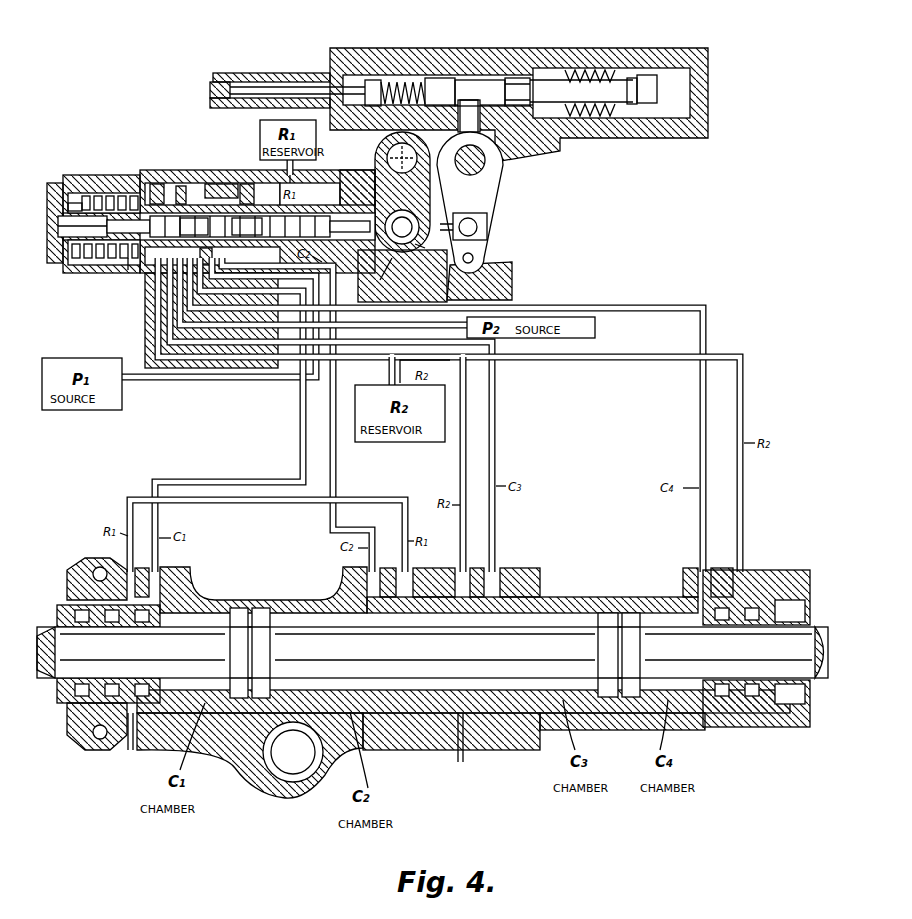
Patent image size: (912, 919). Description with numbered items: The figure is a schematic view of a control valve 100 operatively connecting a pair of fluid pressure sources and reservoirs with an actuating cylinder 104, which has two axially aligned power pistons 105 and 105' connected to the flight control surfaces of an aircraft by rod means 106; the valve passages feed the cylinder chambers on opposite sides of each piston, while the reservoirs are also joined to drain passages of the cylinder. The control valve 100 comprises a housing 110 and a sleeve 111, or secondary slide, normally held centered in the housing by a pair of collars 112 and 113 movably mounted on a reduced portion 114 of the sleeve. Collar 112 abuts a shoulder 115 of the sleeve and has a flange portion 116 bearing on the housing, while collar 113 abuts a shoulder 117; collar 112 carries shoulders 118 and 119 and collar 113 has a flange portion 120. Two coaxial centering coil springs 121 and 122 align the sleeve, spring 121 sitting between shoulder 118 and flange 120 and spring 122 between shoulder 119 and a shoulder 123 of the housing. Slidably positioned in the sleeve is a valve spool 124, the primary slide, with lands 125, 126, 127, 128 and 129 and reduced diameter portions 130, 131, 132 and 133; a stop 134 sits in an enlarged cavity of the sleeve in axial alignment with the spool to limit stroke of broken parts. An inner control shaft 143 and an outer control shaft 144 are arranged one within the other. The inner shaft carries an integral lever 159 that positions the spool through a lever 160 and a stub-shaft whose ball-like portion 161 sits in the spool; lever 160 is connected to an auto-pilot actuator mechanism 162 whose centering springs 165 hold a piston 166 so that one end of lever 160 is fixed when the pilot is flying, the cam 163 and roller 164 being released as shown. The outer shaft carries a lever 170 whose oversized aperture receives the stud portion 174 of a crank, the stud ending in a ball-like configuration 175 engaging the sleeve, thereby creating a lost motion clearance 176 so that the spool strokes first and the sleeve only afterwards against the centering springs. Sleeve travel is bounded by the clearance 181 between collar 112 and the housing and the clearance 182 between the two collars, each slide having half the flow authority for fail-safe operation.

The control valve 100 is at (112, 150).
The actuating cylinder 104 is at (308, 596).
The power piston 105 is at (251, 634).
The power piston 105' is at (619, 633).
The rod means 106 is at (170, 643).
The housing 110 is at (178, 190).
The sleeve 111 is at (340, 183).
The collar 112 is at (124, 270).
The collar 113 is at (74, 270).
The reduced portion 114 is at (54, 264).
The shoulder 115 is at (128, 278).
The flange portion 116 is at (134, 275).
The shoulder 117 is at (68, 206).
The shoulder 118 is at (106, 183).
The shoulder 119 is at (112, 270).
The flange portion 120 is at (70, 176).
The centering coil spring 121 is at (100, 262).
The centering coil spring 122 is at (98, 182).
The shoulder 123 is at (90, 270).
The valve spool 124 is at (300, 185).
The land 125 is at (140, 180).
The land 126 is at (147, 300).
The land 127 is at (194, 226).
The land 128 is at (222, 180).
The land 129 is at (301, 226).
The reduced diameter portion 130 is at (160, 184).
The reduced diameter portion 131 is at (190, 186).
The reduced diameter portion 132 is at (213, 182).
The reduced diameter portion 133 is at (232, 182).
The stop 134 is at (58, 226).
The inner control shaft 143 is at (395, 160).
The outer control shaft 144 is at (410, 149).
The lever 159 is at (500, 198).
The lever 160 is at (540, 139).
The ball-like portion 161 is at (478, 228).
The auto-pilot actuator mechanism 162 is at (461, 38).
The cam 163 is at (500, 278).
The roller 164 is at (485, 258).
The centering spring 165 is at (602, 70).
The piston 166 is at (490, 80).
The lever 170 is at (432, 248).
The stud portion 174 is at (402, 262).
The ball-like configuration 175 is at (402, 227).
The lost motion clearance 176 is at (380, 275).
The clearance 181 is at (126, 180).
The clearance 182 is at (88, 182).